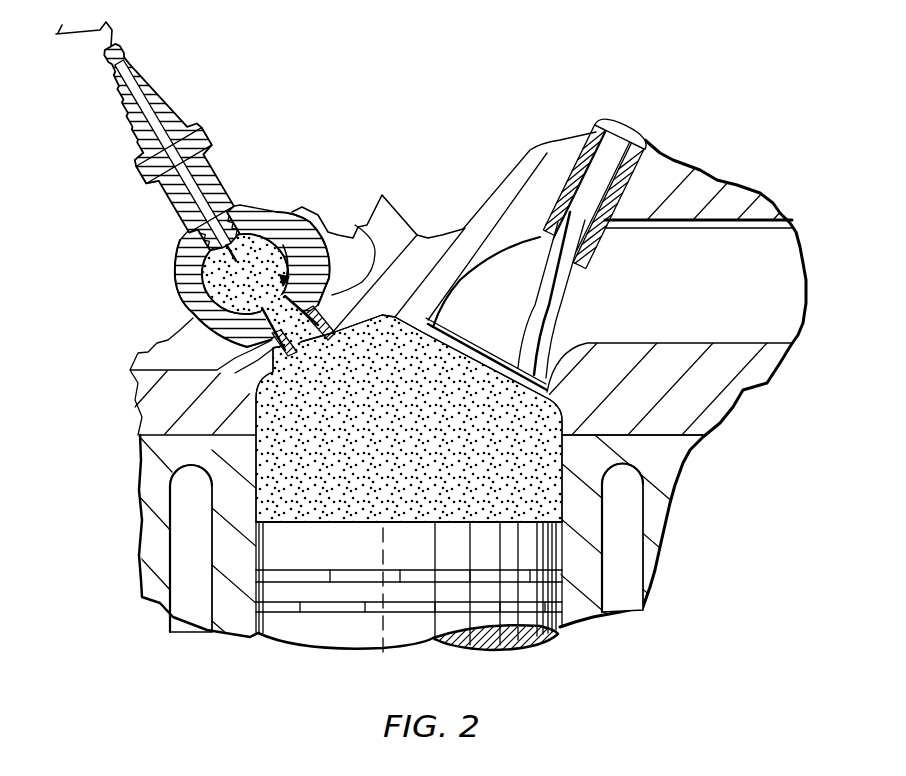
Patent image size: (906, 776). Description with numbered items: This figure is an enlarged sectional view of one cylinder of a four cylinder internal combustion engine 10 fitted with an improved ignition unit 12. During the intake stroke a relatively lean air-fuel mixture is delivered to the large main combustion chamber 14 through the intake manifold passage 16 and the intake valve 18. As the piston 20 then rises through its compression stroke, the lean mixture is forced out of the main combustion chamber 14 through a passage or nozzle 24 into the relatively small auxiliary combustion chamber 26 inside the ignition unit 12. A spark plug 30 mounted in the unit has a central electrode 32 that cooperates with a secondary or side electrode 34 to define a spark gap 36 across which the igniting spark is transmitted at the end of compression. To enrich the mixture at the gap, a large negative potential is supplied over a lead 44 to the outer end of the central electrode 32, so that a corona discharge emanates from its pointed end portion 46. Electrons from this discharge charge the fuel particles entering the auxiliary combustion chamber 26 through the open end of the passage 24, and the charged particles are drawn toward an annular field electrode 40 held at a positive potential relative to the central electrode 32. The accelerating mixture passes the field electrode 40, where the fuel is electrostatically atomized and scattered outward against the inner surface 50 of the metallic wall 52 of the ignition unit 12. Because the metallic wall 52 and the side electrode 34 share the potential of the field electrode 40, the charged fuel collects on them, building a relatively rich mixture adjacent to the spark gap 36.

The internal combustion engine 10 is at (530, 97).
The ignition unit 12 is at (265, 131).
The main combustion chamber 14 is at (417, 410).
The intake manifold passage 16 is at (787, 277).
The intake valve 18 is at (545, 293).
The piston 20 is at (421, 537).
The passage or nozzle 24 is at (262, 360).
The auxiliary combustion chamber 26 is at (300, 232).
The spark plug 30 is at (140, 182).
The central electrode 32 is at (183, 200).
The secondary or side electrode 34 is at (278, 208).
The spark gap 36 is at (247, 214).
The field electrode 40 is at (222, 302).
The lead 44 is at (114, 29).
The end portion 46 is at (207, 251).
The inner surface 50 is at (217, 280).
The metallic wall 52 is at (308, 212).